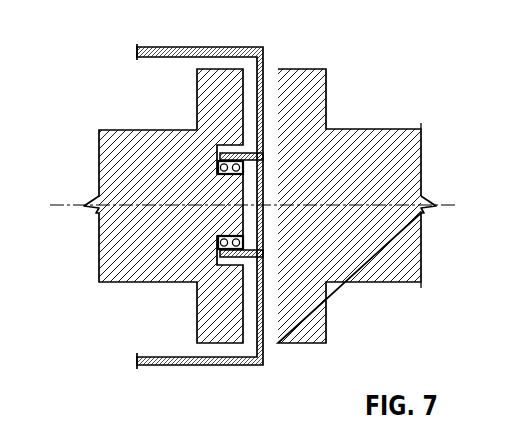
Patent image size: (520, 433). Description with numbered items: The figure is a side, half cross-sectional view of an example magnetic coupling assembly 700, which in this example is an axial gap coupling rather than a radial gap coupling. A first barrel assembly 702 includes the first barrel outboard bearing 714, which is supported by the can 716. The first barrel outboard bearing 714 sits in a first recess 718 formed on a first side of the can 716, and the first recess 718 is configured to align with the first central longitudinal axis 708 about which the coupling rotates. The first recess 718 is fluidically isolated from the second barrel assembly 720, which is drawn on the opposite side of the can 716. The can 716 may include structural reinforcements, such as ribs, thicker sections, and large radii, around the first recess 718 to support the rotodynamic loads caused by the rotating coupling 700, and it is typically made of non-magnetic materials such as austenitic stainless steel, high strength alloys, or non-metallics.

The magnetic coupling assembly 700 is at (85, 62).
The first barrel assembly 702 is at (176, 349).
The first central longitudinal axis 708 is at (60, 207).
The first barrel outboard bearing 714 is at (230, 246).
The can 716 is at (263, 254).
The first recess 718 is at (252, 197).
The second barrel assembly 720 is at (348, 75).